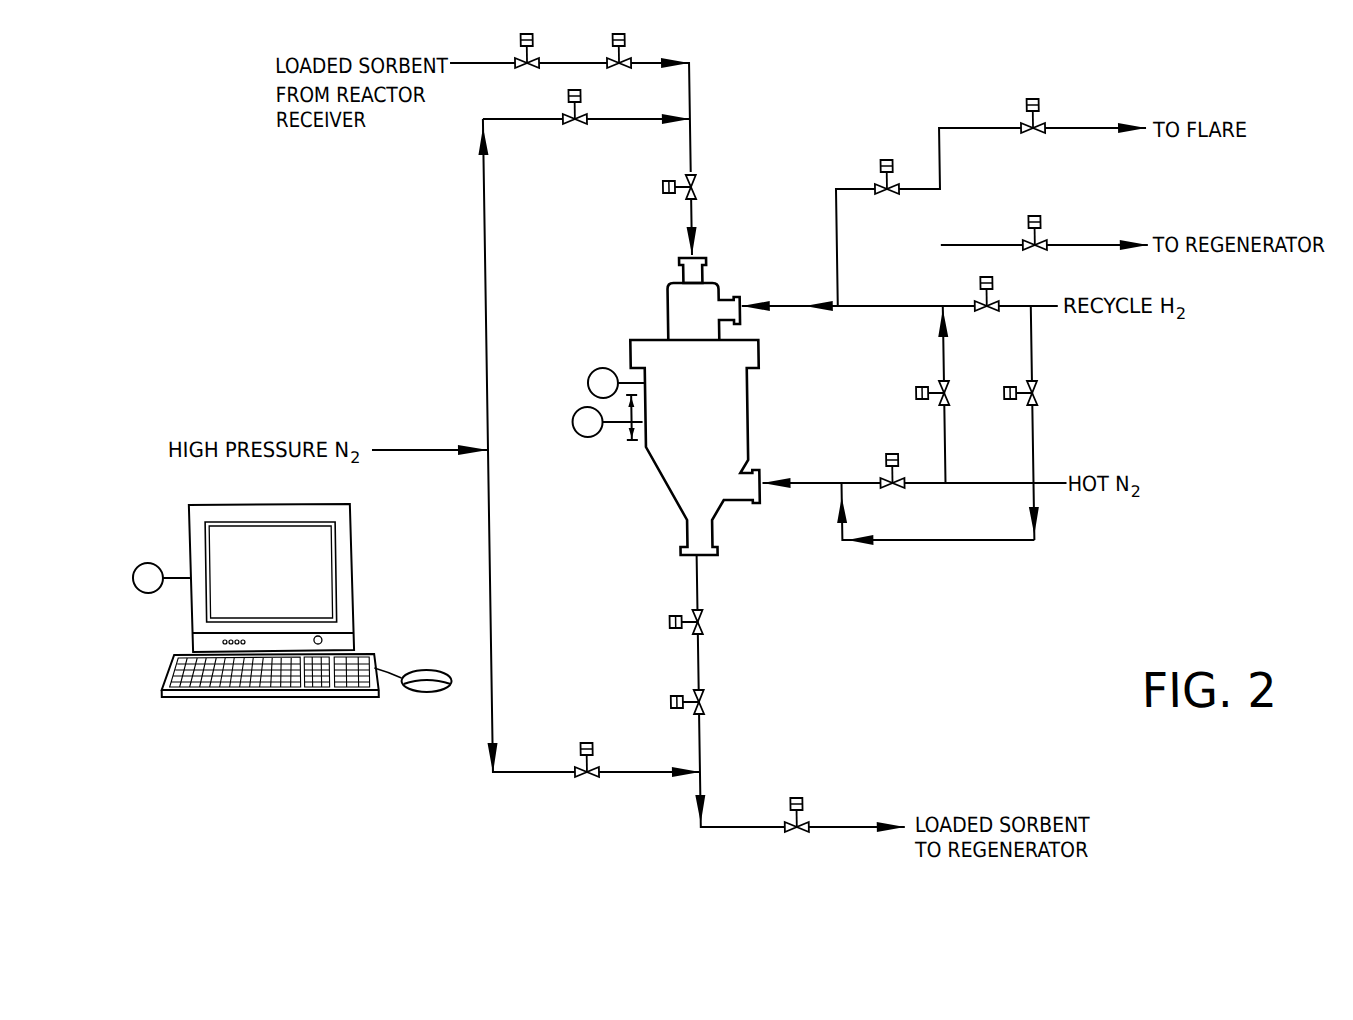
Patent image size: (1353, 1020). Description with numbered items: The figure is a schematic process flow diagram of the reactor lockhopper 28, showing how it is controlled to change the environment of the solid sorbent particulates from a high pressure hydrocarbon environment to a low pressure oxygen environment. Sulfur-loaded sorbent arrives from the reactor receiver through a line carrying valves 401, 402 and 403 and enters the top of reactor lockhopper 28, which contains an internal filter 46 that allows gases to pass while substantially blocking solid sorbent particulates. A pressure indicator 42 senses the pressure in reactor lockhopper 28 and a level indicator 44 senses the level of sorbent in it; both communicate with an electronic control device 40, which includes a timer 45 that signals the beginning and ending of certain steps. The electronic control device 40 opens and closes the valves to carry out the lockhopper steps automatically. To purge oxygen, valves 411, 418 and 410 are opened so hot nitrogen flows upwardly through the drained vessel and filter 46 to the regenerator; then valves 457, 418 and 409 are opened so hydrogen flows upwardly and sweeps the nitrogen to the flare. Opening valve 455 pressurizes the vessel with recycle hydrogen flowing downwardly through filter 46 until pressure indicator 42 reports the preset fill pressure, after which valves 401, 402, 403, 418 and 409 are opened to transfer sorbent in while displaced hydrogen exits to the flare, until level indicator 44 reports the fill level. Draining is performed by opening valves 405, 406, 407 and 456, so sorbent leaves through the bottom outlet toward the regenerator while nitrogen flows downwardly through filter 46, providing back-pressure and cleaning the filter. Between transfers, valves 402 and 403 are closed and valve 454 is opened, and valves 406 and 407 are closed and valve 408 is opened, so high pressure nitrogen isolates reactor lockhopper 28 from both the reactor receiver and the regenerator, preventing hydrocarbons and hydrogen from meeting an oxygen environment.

The reactor lockhopper 28 is at (663, 483).
The electronic control device 40 is at (188, 535).
The pressure indicator 42 is at (589, 382).
The level indicator 44 is at (573, 422).
The timer 45 is at (131, 578).
The internal filter 46 is at (670, 313).
The valve 401 is at (527, 36).
The valve 402 is at (619, 36).
The valve 403 is at (667, 186).
The valve 405 is at (667, 621).
The valve 406 is at (667, 701).
The valve 407 is at (797, 800).
The valve 408 is at (576, 749).
The valve 409 is at (1044, 101).
The valve 410 is at (1044, 217).
The valve 411 is at (886, 457).
The valve 418 is at (885, 162).
The valve 454 is at (574, 92).
The valve 455 is at (995, 278).
The valve 456 is at (917, 393).
The valve 457 is at (1005, 388).